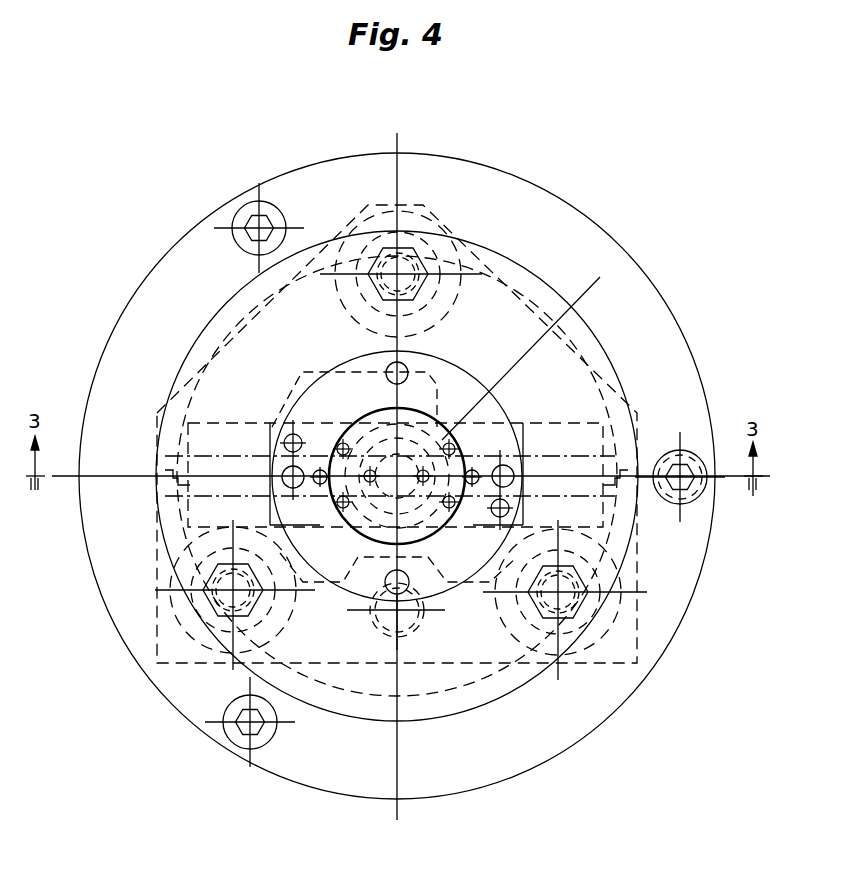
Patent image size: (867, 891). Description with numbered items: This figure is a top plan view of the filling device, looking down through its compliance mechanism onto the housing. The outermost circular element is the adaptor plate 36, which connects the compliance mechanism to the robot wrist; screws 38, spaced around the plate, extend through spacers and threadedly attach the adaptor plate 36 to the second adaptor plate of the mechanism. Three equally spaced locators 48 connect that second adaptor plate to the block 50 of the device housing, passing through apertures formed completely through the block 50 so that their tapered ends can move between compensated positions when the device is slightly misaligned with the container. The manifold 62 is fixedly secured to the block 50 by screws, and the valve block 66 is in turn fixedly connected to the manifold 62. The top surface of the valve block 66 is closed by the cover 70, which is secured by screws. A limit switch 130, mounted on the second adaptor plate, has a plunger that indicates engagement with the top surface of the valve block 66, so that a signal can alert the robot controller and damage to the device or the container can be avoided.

The adaptor plate 36 is at (635, 260).
The screws 38 is at (262, 210).
The locators 48 is at (378, 250).
The block 50 is at (487, 342).
The manifold 62 is at (325, 362).
The valve block 66 is at (607, 393).
The cover 70 is at (498, 398).
The limit switch 130 is at (433, 437).